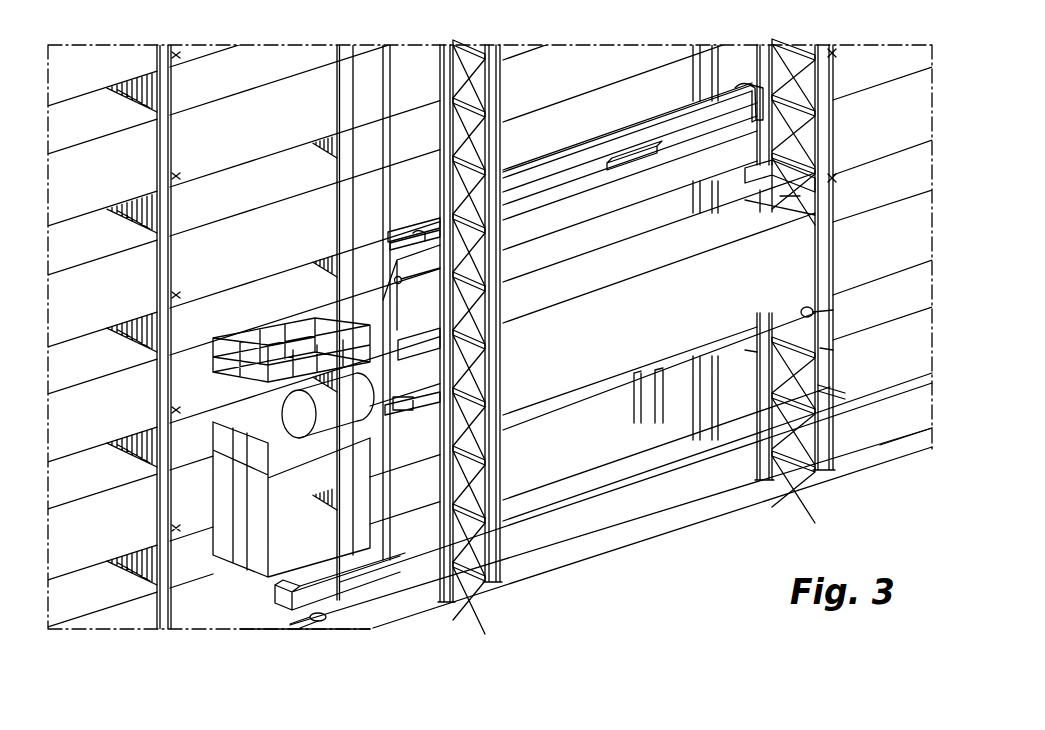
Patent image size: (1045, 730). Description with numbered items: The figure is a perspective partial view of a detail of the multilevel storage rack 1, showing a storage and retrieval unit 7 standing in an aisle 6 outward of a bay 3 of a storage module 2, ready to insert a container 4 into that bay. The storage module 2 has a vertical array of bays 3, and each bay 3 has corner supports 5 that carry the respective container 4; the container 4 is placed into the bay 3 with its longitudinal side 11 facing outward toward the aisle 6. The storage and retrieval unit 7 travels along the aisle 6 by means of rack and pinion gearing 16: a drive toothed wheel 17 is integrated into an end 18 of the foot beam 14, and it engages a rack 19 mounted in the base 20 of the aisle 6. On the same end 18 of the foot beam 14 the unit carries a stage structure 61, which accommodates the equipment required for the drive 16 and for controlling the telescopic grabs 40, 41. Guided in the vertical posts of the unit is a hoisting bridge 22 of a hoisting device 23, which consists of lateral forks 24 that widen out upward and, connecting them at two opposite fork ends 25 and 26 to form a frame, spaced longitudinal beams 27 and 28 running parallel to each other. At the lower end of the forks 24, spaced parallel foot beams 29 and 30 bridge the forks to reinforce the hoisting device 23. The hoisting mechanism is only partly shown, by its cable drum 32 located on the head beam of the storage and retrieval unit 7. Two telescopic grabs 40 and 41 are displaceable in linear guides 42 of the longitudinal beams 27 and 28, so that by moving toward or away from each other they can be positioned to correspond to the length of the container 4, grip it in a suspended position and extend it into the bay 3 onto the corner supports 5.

The multilevel storage rack 1 is at (232, 32).
The storage module 2 is at (505, 572).
The bay 3 is at (765, 363).
The container 4 is at (665, 321).
The corner support 5 is at (830, 322).
The aisle 6 is at (430, 594).
The storage and retrieval unit 7 is at (330, 216).
The longitudinal side 11 is at (840, 242).
The foot beam 14 is at (694, 495).
The rack and pinion gearing 16 is at (270, 630).
The drive toothed wheel 17 is at (322, 622).
The end of the foot beam 18 is at (275, 600).
The rack 19 is at (860, 430).
The base 20 is at (903, 426).
The hoisting bridge 22 is at (522, 154).
The hoisting device 23 is at (594, 128).
The lateral fork 24 is at (390, 330).
The fork end 25 is at (730, 85).
The fork end 26 is at (392, 246).
The longitudinal beam 27 is at (553, 170).
The longitudinal beam 28 is at (680, 175).
The foot beam 29 is at (420, 356).
The foot beam 30 is at (420, 414).
The cable drum 32 is at (322, 420).
The telescopic grab 40 is at (394, 278).
The telescopic grab 41 is at (746, 180).
The linear guide 42 is at (640, 150).
The stage structure 61 is at (220, 508).